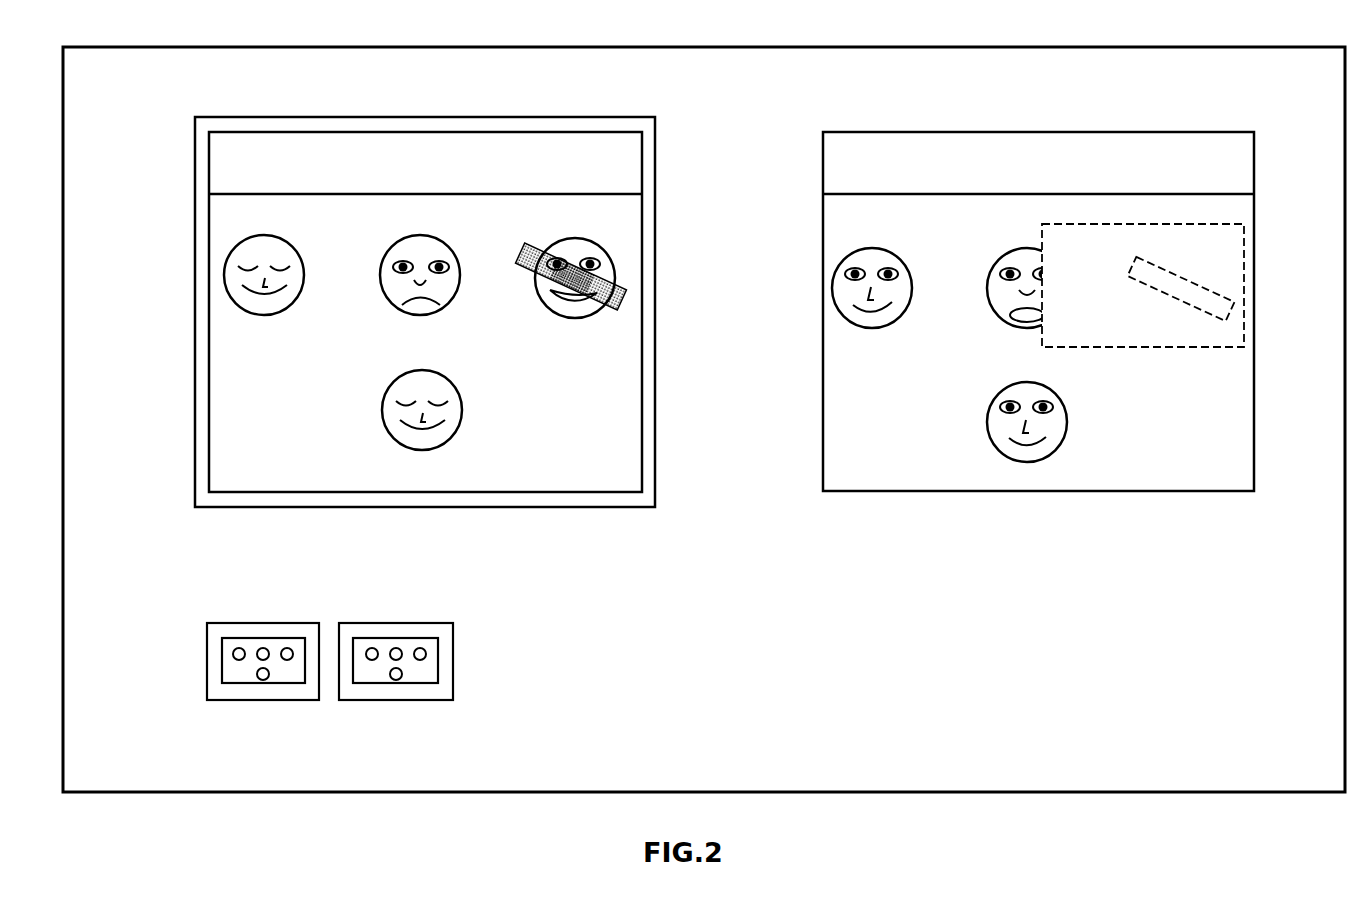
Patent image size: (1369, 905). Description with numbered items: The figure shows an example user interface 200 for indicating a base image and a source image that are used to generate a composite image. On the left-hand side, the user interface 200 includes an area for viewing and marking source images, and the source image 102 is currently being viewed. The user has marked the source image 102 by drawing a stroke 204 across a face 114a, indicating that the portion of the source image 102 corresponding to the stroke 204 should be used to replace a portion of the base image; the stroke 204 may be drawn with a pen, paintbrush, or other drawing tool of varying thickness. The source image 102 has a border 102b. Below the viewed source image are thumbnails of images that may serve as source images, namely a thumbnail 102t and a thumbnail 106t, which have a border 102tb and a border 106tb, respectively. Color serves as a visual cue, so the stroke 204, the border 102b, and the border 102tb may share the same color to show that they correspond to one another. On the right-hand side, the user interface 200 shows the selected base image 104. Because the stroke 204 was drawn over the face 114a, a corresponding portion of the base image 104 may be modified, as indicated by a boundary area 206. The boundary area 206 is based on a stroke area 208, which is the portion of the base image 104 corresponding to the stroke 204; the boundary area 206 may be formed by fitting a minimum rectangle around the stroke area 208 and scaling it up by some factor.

The user interface 200 is at (1275, 47).
The source image 102 is at (209, 378).
The border 102b is at (195, 297).
The face 114a is at (572, 238).
The stroke 204 is at (615, 308).
The base image 104 is at (1038, 492).
The boundary area 206 is at (1198, 348).
The stroke area 208 is at (1233, 313).
The border 102tb is at (207, 688).
The thumbnail 102t is at (263, 683).
The border 106tb is at (453, 697).
The thumbnail 106t is at (396, 683).